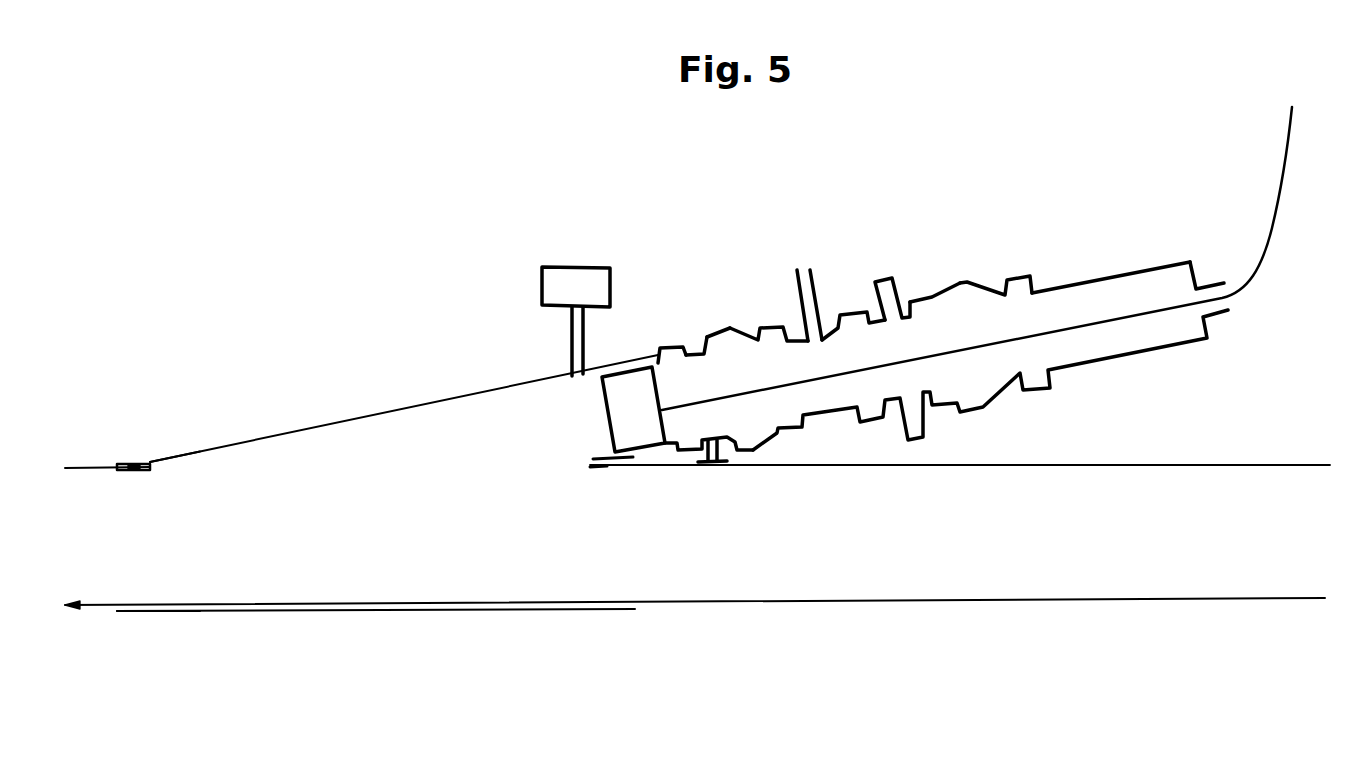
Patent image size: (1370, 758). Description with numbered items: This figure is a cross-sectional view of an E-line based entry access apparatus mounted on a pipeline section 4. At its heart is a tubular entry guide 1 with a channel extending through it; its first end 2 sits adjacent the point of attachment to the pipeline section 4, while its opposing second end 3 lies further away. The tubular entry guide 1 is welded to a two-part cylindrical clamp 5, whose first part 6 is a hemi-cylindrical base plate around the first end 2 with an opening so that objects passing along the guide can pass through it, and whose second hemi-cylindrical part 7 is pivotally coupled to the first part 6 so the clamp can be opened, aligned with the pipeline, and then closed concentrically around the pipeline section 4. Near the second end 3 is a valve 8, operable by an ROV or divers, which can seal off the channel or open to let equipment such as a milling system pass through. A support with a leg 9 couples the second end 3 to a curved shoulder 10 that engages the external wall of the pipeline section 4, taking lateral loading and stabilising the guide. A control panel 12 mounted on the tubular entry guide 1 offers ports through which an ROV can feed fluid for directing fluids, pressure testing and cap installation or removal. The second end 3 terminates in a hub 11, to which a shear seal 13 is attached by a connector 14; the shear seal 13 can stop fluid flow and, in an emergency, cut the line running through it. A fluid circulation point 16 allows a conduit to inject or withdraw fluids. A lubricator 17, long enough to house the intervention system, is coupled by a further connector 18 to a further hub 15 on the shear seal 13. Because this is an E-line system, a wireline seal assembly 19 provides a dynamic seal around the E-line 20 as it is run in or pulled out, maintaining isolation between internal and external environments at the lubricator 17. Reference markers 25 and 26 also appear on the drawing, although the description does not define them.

The tubular entry guide 1 is at (383, 412).
The first end 2 is at (193, 452).
The opposing second end 3 is at (690, 353).
The pipeline section 4 is at (1007, 597).
The two-part cylindrical clamp 5 is at (380, 612).
The first part 6 is at (125, 460).
The second hemi-cylindrical part 7 is at (165, 612).
The valve 8 is at (665, 350).
The leg 9 is at (730, 445).
The shoulder 10 is at (700, 463).
The hub 11 is at (700, 337).
The control panel 12 is at (552, 270).
The shear seal 13 is at (882, 277).
The connector 14 is at (730, 322).
The further hub 15 is at (920, 293).
The fluid circulation point 16 is at (813, 270).
The lubricator 17 is at (1100, 277).
The further connector 18 is at (957, 277).
The wireline seal assembly 19 is at (1208, 283).
The E-line 20 is at (1287, 183).
The support plate 25 is at (135, 470).
The support block 26 is at (632, 397).